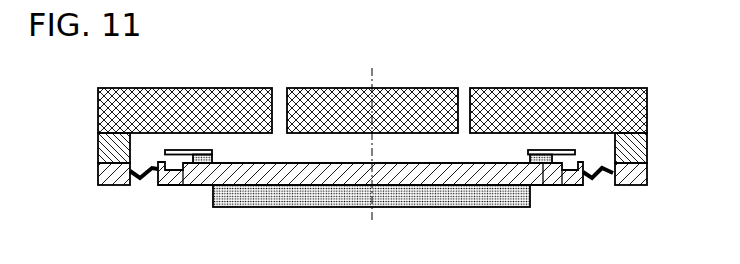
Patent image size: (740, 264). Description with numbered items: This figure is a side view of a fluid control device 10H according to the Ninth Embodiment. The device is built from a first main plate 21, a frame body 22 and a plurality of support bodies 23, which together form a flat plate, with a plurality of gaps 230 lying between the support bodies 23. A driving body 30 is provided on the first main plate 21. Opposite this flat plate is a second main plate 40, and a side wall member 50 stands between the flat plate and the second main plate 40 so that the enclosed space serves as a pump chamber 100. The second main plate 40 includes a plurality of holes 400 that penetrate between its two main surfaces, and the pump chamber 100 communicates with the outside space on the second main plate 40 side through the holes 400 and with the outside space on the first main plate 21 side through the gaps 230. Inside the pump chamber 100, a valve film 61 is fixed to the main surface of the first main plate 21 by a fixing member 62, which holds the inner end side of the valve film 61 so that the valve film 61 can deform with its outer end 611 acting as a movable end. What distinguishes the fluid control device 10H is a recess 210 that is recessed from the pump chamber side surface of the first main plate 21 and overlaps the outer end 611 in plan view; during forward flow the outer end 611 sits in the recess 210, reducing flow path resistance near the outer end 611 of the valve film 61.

The fluid control device 10H is at (638, 61).
The second main plate 40 is at (647, 113).
The pump chamber 100 is at (337, 138).
The holes 400 is at (277, 90).
The side wall member 50 is at (637, 148).
The frame body 22 is at (394, 203).
The recess 210 is at (566, 172).
The fixing member 62 is at (540, 186).
The first main plate 21 is at (403, 172).
The support bodies 23 is at (394, 202).
The gaps 230 is at (597, 180).
The valve film 61 is at (394, 108).
The outer end 611 is at (575, 150).
The driving body 30 is at (442, 207).